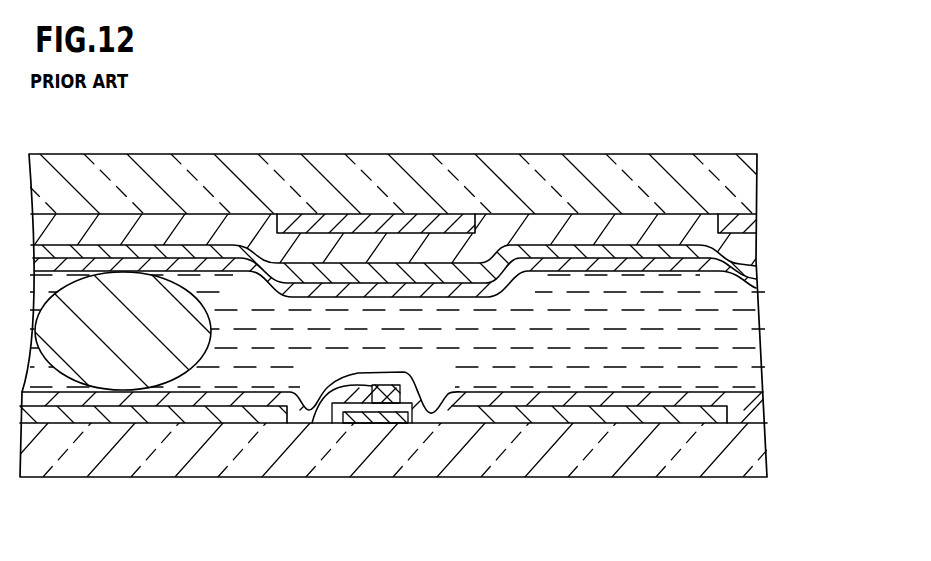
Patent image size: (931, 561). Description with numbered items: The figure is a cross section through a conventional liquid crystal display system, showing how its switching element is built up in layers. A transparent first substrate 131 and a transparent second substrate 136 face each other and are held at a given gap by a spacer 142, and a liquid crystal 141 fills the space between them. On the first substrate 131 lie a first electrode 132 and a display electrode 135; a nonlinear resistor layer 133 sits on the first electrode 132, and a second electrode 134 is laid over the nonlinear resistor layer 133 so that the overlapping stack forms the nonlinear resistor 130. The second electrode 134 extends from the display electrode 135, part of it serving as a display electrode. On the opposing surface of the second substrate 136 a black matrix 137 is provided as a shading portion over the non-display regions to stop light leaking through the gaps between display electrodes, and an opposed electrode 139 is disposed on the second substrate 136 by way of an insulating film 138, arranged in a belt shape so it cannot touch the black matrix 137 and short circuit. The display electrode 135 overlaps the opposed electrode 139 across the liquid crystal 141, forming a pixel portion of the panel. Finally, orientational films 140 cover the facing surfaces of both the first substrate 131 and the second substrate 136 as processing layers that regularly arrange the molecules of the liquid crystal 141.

The nonlinear resistor 130 is at (356, 411).
The first substrate 131 is at (207, 463).
The first electrode 132 is at (372, 422).
The nonlinear resistor layer 133 is at (410, 421).
The second electrode 134 is at (313, 424).
The display electrode 135 is at (587, 417).
The second substrate 136 is at (653, 177).
The black matrix 137 is at (298, 226).
The insulating film 138 is at (750, 245).
The opposed electrode 139 is at (757, 268).
The orientational film 140 is at (757, 278).
The liquid crystal 141 is at (753, 363).
The spacer 142 is at (87, 370).